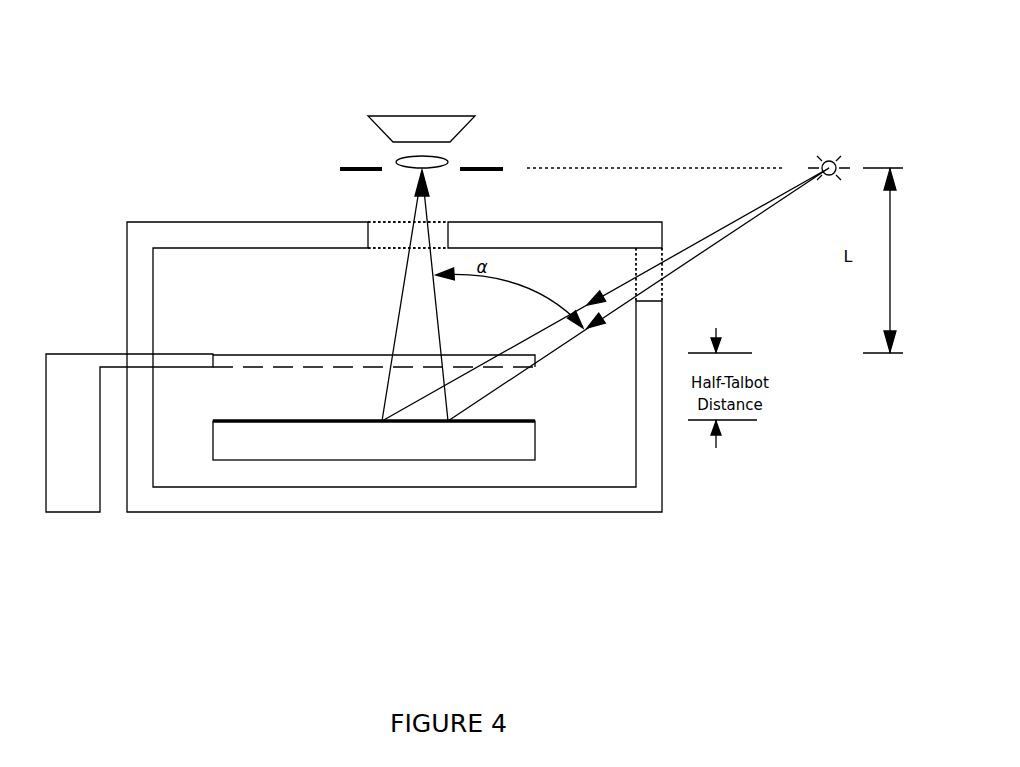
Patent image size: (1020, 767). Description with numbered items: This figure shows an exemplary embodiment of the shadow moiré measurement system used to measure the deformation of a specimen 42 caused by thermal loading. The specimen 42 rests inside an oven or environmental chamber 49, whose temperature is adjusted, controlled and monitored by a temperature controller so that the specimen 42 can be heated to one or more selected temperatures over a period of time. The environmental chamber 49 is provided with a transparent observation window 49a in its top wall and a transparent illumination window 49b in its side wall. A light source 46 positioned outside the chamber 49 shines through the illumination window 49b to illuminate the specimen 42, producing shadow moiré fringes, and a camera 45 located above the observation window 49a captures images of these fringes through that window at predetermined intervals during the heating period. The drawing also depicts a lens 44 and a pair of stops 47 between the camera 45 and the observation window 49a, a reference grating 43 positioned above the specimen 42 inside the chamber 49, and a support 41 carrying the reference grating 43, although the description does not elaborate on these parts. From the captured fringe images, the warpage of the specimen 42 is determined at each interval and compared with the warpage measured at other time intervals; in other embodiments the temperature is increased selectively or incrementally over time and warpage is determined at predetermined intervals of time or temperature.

The support 41 is at (75, 513).
The specimen 42 is at (535, 423).
The reference grating 43 is at (213, 353).
The lens 44 is at (395, 162).
The camera 45 is at (388, 142).
The light source 46 is at (812, 155).
The aperture stops 47 is at (473, 162).
The environmental chamber 49 is at (207, 222).
The observation window 49a is at (382, 235).
The illumination window 49b is at (650, 275).